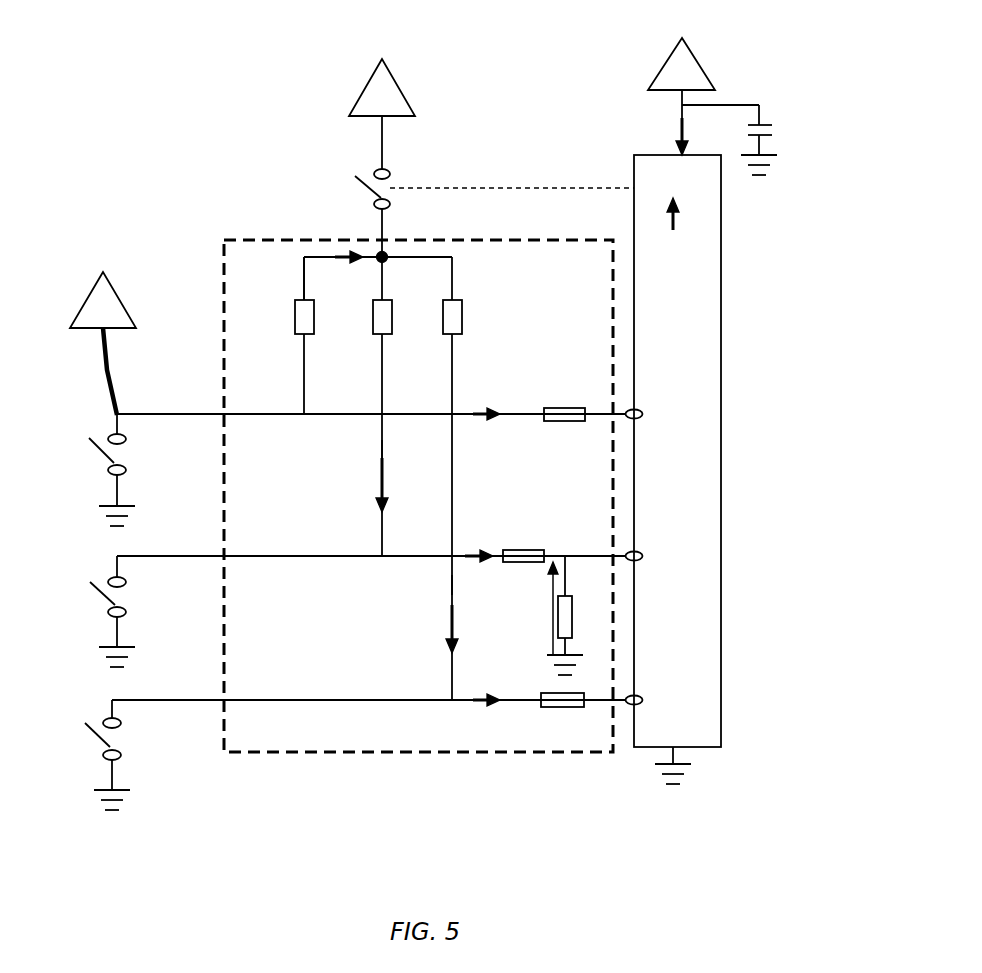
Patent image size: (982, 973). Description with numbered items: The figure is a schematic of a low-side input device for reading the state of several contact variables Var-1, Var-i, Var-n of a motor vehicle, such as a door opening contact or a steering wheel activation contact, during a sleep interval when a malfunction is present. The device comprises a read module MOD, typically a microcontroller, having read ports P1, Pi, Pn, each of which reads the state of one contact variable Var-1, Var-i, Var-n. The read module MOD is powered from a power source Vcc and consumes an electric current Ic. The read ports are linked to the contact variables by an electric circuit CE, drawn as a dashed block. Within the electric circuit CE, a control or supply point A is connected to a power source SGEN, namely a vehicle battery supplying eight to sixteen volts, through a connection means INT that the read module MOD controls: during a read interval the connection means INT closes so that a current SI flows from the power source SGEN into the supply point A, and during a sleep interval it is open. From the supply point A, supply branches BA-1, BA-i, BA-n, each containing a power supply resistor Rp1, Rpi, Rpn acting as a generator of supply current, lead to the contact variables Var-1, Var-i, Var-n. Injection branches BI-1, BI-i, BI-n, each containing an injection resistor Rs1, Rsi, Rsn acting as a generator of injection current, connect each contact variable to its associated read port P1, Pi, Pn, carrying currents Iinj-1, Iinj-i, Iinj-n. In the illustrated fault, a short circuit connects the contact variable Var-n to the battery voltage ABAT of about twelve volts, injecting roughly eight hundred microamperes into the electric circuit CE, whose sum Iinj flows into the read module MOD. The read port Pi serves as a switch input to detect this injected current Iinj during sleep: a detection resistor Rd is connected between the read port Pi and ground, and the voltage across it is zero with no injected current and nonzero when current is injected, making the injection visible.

The power source SGEN is at (382, 101).
The connection means INT is at (471, 213).
The electric circuit CE is at (332, 752).
The control point A is at (378, 268).
The injected signal current SI is at (347, 272).
The power supply resistor Rpn is at (287, 335).
The power supply resistor Rpi is at (367, 406).
The power supply resistor Rp1 is at (438, 478).
The supply branch BA-n is at (304, 288).
The supply branch BA-i is at (380, 456).
The supply branch BA-1 is at (450, 590).
The injected current Iinj-n is at (490, 429).
The injected current Iinj-i is at (408, 522).
The injected current Iinj-1 is at (441, 671).
The read port Pn is at (393, 415).
The read port Pi is at (392, 558).
The read port P1 is at (393, 701).
The injection resistor Rsn is at (563, 429).
The injection resistor Rsi is at (523, 543).
The injection resistor Rs1 is at (562, 715).
The injection branch BI-n is at (518, 413).
The injection branch BI-i is at (460, 554).
The injection branch BI-1 is at (510, 697).
The detection resistor Rd is at (574, 615).
The read module MOD is at (677, 469).
The injected current Iinj is at (675, 229).
The power source Vcc is at (703, 65).
The electric current Ic is at (669, 135).
The battery voltage ABAT is at (103, 329).
The contact variable Var-n is at (85, 470).
The contact variable Var-i is at (85, 611).
The contact variable Var-1 is at (81, 755).